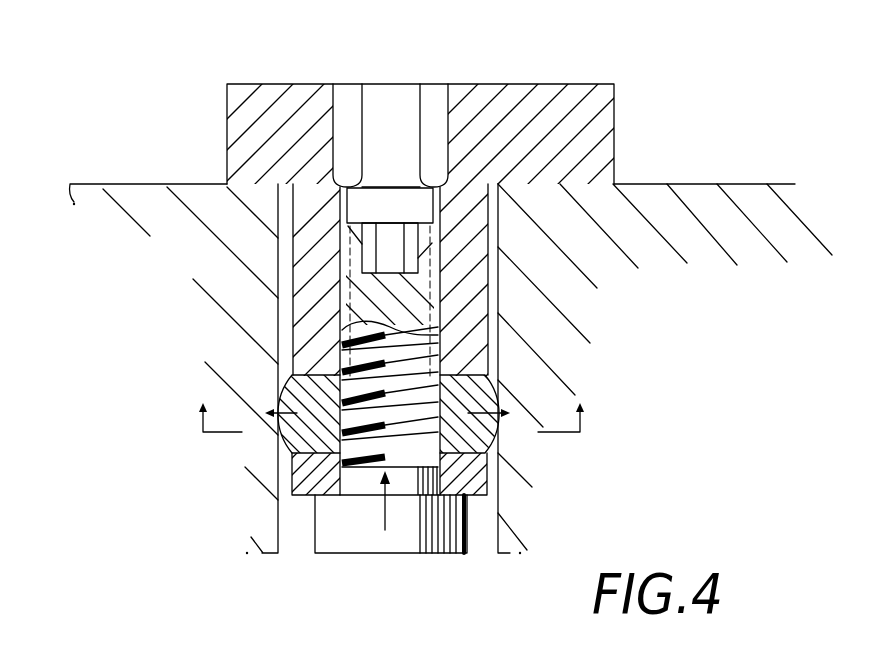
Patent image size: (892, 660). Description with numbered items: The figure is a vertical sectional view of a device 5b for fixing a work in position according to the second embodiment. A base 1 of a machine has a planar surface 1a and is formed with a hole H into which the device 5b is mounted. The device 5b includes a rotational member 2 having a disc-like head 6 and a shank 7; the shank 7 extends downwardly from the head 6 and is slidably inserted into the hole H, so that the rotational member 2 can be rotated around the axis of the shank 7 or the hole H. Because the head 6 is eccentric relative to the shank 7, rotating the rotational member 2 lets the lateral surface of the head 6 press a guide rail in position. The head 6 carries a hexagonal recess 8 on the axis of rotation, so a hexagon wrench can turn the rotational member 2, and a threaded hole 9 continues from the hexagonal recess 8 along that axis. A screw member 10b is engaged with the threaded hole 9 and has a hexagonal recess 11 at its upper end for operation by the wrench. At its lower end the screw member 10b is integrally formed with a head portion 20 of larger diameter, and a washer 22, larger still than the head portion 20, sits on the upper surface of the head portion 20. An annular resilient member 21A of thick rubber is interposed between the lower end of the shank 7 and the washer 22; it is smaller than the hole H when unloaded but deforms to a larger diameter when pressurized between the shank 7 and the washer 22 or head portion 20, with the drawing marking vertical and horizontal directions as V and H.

The base 1 is at (662, 214).
The planar surface 1a is at (748, 182).
The rotational member 2 is at (389, 249).
The device 5b is at (157, 152).
The head 6 is at (613, 120).
The shank 7 is at (298, 278).
The hexagonal recess 8 is at (452, 108).
The threaded hole 9 is at (340, 313).
The screw member 10b is at (428, 297).
The hexagonal recess 11 is at (358, 241).
The head portion 20 is at (345, 535).
The annular resilient member 21A is at (278, 440).
The washer 22 is at (292, 488).
The hole H is at (498, 508).
The vertical direction V is at (386, 428).